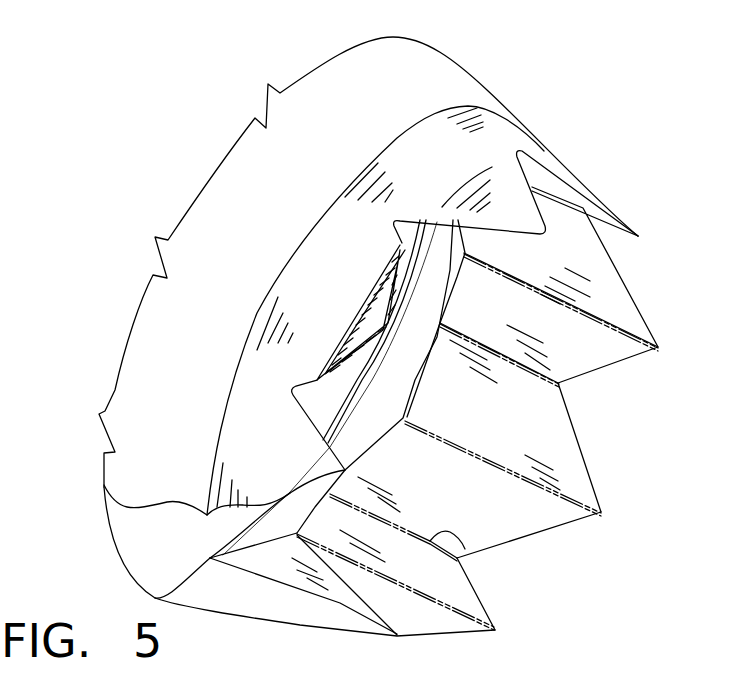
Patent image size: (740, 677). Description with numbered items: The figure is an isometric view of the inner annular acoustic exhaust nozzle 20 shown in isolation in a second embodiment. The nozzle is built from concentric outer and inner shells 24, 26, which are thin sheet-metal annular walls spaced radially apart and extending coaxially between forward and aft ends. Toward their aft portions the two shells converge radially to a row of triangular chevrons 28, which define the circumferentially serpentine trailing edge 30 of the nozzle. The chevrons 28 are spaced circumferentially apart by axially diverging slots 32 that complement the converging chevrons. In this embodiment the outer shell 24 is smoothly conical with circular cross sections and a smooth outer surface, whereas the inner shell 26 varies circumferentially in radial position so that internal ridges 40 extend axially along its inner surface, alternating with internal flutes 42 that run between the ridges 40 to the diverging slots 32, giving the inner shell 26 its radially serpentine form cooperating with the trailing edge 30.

The inner annular acoustic exhaust nozzle 20 is at (488, 90).
The outer shell 24 is at (267, 622).
The inner shell 26 is at (470, 607).
The chevrons 28 is at (295, 465).
The trailing edge 30 is at (590, 465).
The slots 32 is at (611, 412).
The ridges 40 is at (568, 497).
The flutes 42 is at (462, 535).